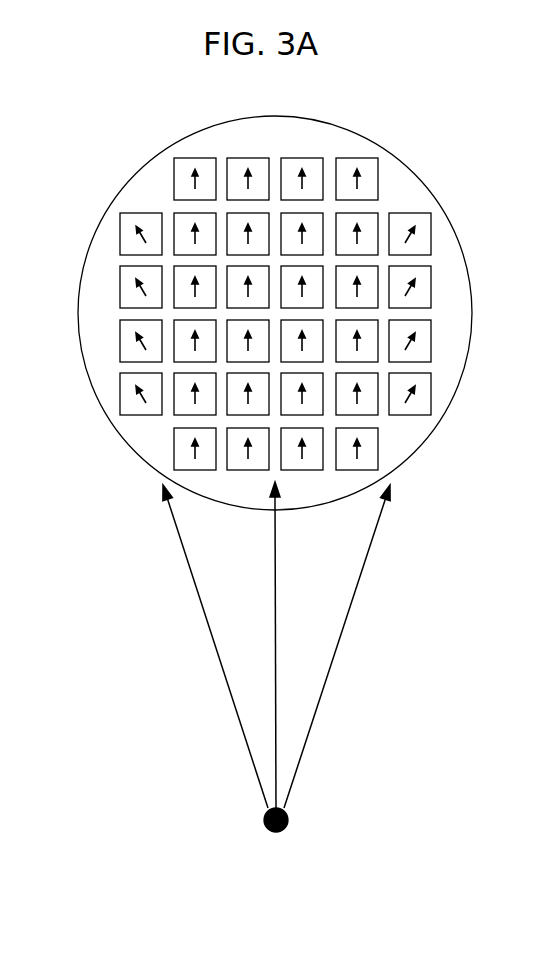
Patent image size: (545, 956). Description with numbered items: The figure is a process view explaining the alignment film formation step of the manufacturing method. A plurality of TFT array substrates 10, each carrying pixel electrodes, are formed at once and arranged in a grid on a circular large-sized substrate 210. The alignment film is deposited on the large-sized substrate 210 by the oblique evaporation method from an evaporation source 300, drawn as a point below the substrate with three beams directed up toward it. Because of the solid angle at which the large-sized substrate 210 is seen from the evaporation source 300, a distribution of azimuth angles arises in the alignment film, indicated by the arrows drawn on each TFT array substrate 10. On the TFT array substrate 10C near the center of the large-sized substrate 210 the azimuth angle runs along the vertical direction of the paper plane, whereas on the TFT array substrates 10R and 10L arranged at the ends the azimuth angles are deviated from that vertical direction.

The TFT array substrate 10 is at (300, 142).
The TFT array substrate arranged near the center 10C is at (187, 165).
The TFT array substrate arranged on the left end 10L is at (123, 240).
The TFT array substrate arranged on the right end 10R is at (414, 222).
The large-sized substrate 210 is at (121, 193).
The evaporation source 300 is at (263, 818).